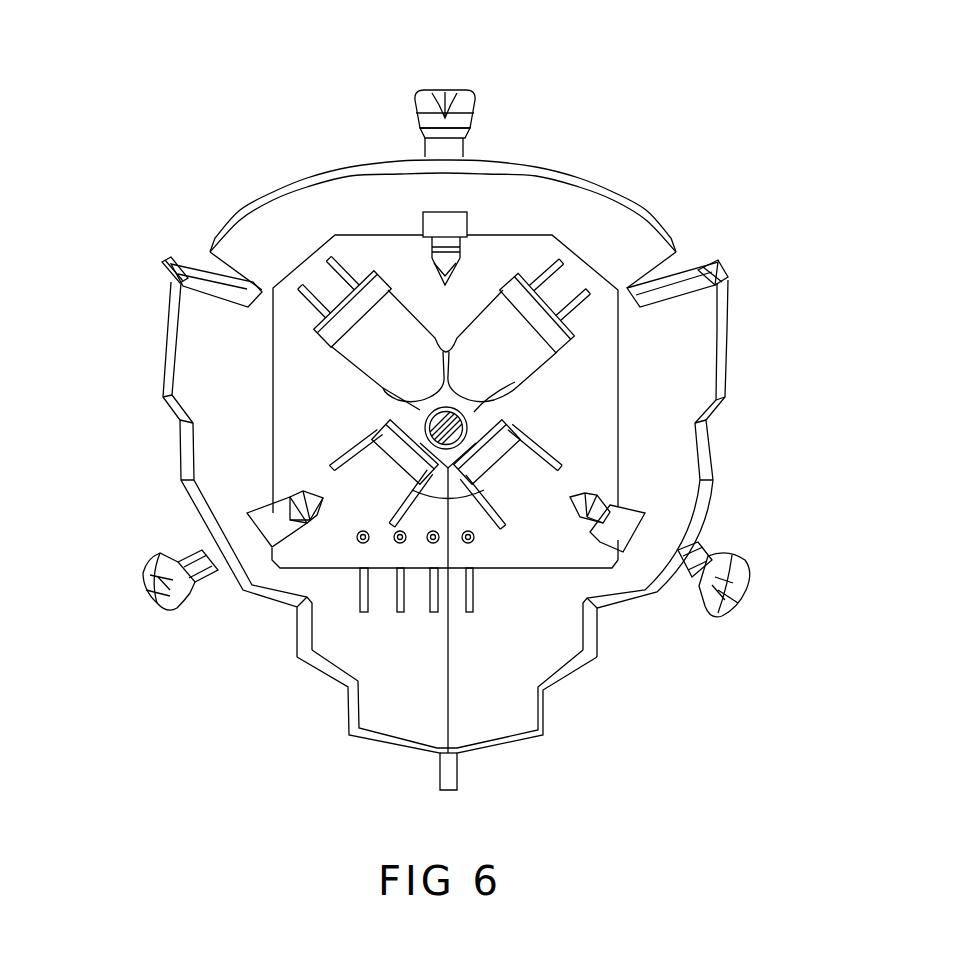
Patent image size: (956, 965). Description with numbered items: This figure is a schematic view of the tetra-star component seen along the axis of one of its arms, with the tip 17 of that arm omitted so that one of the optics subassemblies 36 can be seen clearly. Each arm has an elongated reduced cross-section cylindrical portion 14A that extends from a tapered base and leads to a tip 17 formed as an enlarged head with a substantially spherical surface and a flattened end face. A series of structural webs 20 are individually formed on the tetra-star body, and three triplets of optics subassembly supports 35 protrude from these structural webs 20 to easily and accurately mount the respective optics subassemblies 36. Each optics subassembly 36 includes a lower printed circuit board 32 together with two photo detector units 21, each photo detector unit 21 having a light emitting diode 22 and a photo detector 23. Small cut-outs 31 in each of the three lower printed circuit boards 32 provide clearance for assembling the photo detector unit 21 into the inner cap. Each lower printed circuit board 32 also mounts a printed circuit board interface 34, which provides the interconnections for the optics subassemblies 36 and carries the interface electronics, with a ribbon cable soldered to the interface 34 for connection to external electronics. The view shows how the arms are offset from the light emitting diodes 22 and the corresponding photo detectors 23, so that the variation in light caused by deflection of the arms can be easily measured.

The elongated reduced cross-section cylindrical portion 14A is at (500, 422).
The tip 17 is at (465, 103).
The structural webs 20 is at (540, 212).
The photo detector unit 21 is at (419, 368).
The light emitting diode 22 is at (352, 313).
The photo detector 23 is at (405, 455).
The cut-outs 31 is at (488, 358).
The printed circuit board 32 is at (593, 607).
The printed circuit board interface 34 is at (398, 617).
The optics subassembly supports 35 is at (447, 230).
The optics subassemblies 36 is at (262, 354).